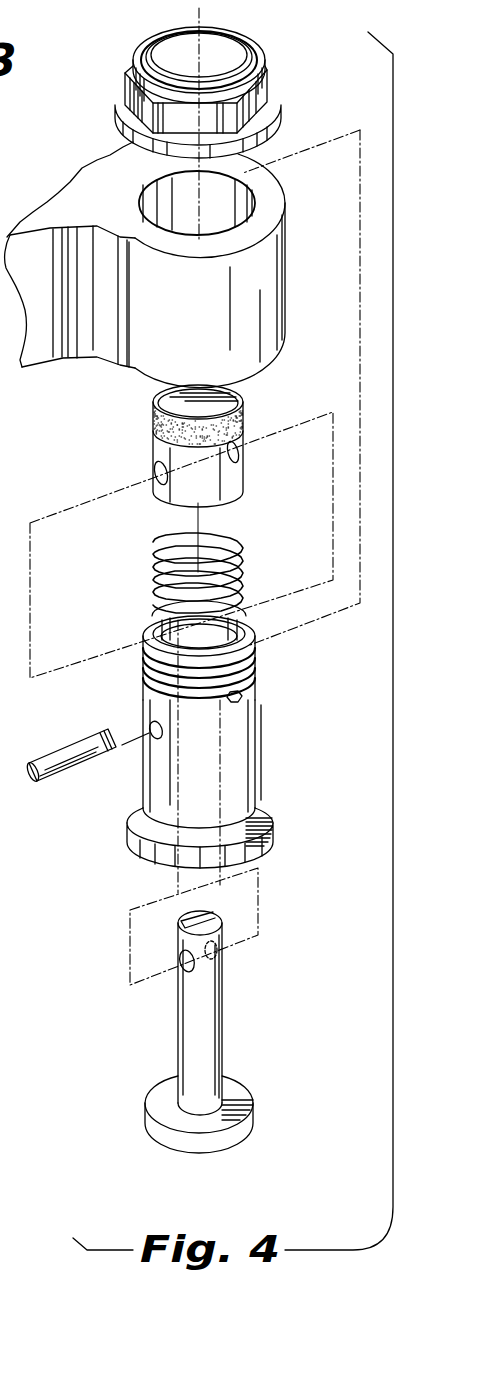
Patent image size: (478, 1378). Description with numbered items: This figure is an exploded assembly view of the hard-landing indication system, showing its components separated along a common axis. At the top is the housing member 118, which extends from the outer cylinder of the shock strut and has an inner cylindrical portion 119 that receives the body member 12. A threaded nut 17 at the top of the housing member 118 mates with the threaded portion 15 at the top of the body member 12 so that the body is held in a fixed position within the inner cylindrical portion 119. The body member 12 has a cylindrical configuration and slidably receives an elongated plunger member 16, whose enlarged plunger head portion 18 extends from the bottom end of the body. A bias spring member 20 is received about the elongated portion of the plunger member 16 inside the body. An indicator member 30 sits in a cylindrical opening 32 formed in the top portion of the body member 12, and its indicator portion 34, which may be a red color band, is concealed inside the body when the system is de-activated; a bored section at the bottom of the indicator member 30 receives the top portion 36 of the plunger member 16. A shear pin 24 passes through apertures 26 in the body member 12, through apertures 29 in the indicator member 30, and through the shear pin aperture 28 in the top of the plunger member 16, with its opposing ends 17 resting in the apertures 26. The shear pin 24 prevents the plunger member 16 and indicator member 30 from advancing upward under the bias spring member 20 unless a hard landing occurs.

The body member 12 is at (219, 722).
The threaded portion 15 is at (257, 660).
The elongated plunger member 16 is at (192, 1013).
The threaded nut 17 is at (113, 79).
The enlarged plunger head portion 18 is at (256, 1113).
The bias spring member 20 is at (251, 563).
The shear pin 24 is at (68, 745).
The apertures 26 is at (148, 725).
The shear pin aperture 28 is at (181, 967).
The apertures 29 is at (152, 477).
The indicator member 30 is at (194, 435).
The cylindrical opening 32 is at (150, 613).
The indicator portion 34 is at (153, 426).
The top portion of the plunger member 36 is at (192, 915).
The housing member 118 is at (286, 264).
The inner cylindrical portion 119 is at (167, 215).